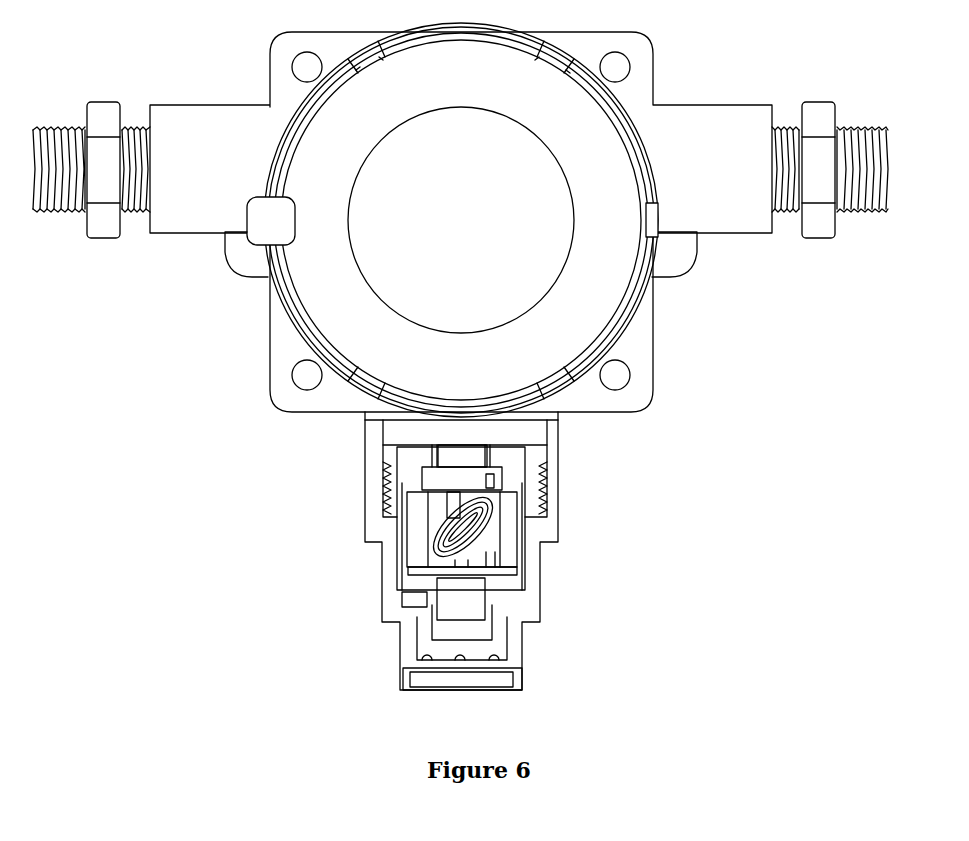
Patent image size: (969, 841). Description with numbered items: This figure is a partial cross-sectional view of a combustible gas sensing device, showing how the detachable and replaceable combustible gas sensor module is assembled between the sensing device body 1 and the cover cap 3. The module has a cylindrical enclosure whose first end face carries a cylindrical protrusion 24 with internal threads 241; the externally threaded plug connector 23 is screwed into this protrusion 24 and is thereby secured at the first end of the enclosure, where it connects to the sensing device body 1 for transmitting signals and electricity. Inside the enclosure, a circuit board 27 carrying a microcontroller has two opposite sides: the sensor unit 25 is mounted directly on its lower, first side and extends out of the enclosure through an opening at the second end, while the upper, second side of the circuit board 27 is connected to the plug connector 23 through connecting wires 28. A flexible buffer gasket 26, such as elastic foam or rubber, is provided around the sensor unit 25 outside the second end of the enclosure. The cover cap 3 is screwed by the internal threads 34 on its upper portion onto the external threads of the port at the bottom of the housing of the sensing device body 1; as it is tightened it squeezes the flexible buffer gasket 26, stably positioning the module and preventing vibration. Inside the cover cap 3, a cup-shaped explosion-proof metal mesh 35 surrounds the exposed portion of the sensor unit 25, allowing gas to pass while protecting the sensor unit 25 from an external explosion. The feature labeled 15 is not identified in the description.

The sensing device body 1 is at (388, 349).
The cover cap 3 is at (380, 538).
The threaded portion 15 is at (388, 470).
The plug connector 23 is at (465, 450).
The cylindrical protrusion 24 is at (500, 474).
The internal threads 241 is at (494, 483).
The sensor unit 25 is at (468, 595).
The flexible buffer gasket 26 is at (425, 597).
The circuit board 27 is at (493, 573).
The connecting wires 28 is at (478, 530).
The internal threads 34 is at (398, 462).
The explosion-proof metal mesh 35 is at (407, 643).